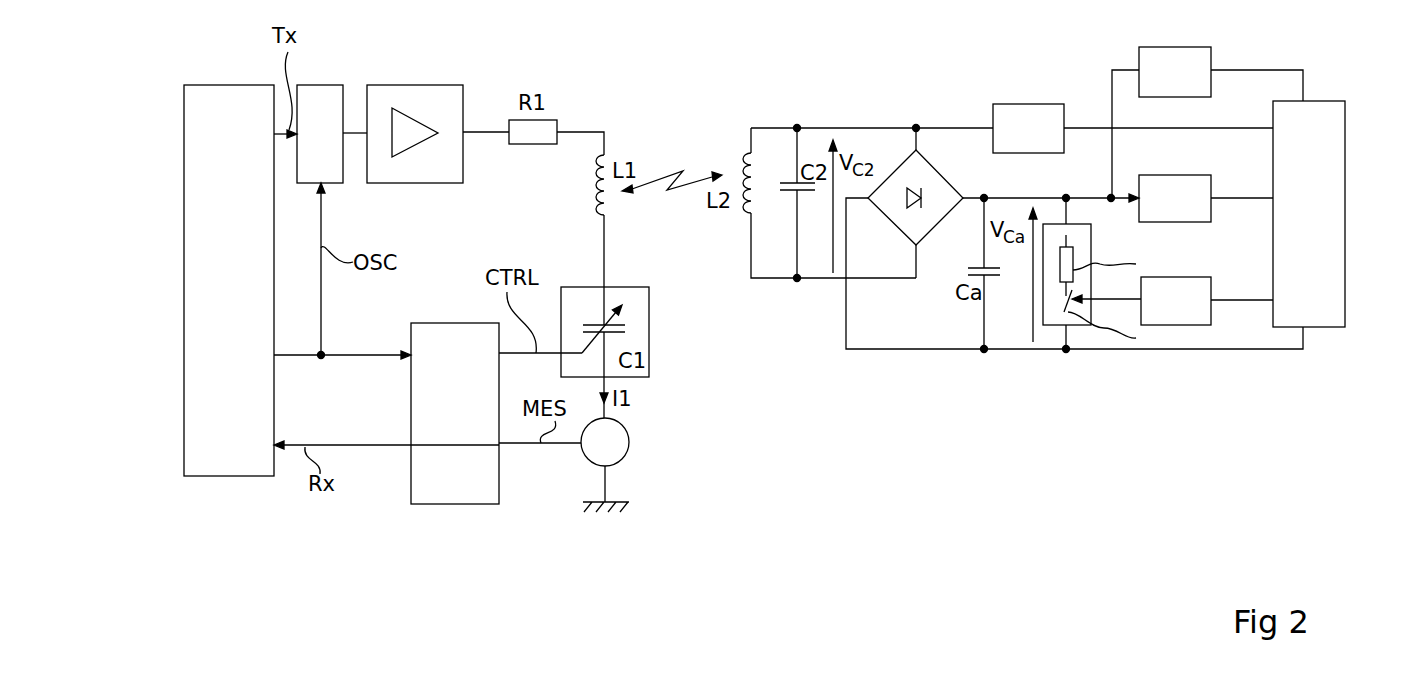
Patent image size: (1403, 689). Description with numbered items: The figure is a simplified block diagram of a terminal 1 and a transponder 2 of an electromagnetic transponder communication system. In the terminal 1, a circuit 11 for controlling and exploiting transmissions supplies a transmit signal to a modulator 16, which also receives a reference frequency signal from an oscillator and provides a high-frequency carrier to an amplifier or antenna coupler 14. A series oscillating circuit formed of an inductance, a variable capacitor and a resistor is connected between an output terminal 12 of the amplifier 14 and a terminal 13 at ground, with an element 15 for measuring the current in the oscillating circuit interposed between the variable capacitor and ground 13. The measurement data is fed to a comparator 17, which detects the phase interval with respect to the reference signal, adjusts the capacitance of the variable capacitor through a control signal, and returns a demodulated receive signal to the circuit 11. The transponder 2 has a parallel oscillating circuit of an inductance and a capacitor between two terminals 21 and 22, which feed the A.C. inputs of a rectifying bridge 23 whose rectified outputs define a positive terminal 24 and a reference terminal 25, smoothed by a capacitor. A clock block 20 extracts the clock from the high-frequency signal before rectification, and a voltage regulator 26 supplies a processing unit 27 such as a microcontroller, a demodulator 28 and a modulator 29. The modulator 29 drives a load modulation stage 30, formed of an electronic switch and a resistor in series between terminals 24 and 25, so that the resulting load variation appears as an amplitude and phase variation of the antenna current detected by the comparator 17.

The terminal 1 is at (370, 553).
The transponder 2 is at (948, 468).
The circuit for controlling and exploiting the transmissions 11 is at (223, 85).
The output terminal 12 is at (483, 133).
The terminal at a reference voltage 13 is at (606, 489).
The amplifier or antenna coupler 14 is at (418, 85).
The element for measuring the current 15 is at (630, 447).
The modulator 16 is at (320, 85).
The comparator 17 is at (440, 504).
The clock extraction block 20 is at (1018, 104).
The first terminal of the oscillating circuit 21 is at (797, 128).
The second terminal of the oscillating circuit 22 is at (797, 282).
The rectifying bridge 23 is at (944, 174).
The positive terminal 24 is at (988, 196).
The reference terminal 25 is at (984, 353).
The voltage regulator 26 is at (1195, 47).
The processing unit 27 is at (1345, 146).
The demodulator 28 is at (1162, 175).
The modulator 29 is at (1165, 277).
The load modulation stage 30 is at (1091, 246).